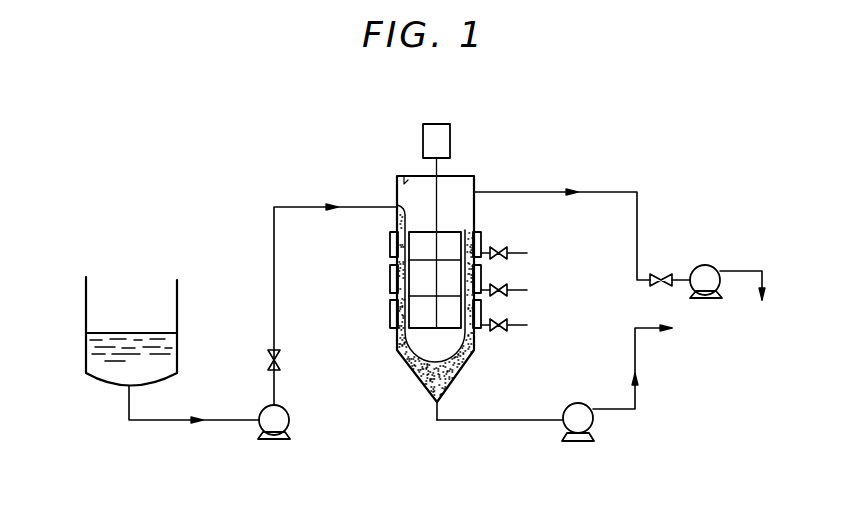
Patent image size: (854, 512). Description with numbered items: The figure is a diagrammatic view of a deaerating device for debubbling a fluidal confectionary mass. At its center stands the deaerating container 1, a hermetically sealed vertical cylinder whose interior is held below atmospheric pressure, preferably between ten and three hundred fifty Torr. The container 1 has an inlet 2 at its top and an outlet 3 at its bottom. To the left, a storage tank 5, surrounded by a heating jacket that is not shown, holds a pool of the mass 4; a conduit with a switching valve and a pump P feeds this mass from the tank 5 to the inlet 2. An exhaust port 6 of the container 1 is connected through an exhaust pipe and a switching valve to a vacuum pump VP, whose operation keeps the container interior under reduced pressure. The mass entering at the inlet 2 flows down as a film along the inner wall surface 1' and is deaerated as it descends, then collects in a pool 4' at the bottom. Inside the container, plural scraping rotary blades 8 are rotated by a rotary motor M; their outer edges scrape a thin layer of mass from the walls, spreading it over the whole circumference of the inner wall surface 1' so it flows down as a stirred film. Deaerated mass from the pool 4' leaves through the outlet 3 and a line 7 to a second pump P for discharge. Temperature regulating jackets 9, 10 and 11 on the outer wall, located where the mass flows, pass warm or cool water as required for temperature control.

The deaerating container 1 is at (465, 263).
The inner wall surface 1' is at (386, 150).
The inlet 2 is at (397, 207).
The outlet 3 is at (437, 403).
The mass 4 is at (131, 306).
The pool 4' is at (421, 371).
The storage tank 5 is at (178, 298).
The exhaust port 6 is at (475, 191).
The line 7 is at (503, 422).
The scraping rotary blades 8 is at (447, 240).
The temperature regulating jacket 9 is at (390, 245).
The temperature regulating jacket 10 is at (390, 280).
The temperature regulating jacket 11 is at (390, 318).
The rotary motor M is at (452, 145).
The pump P is at (587, 418).
The vacuum pump VP is at (705, 270).